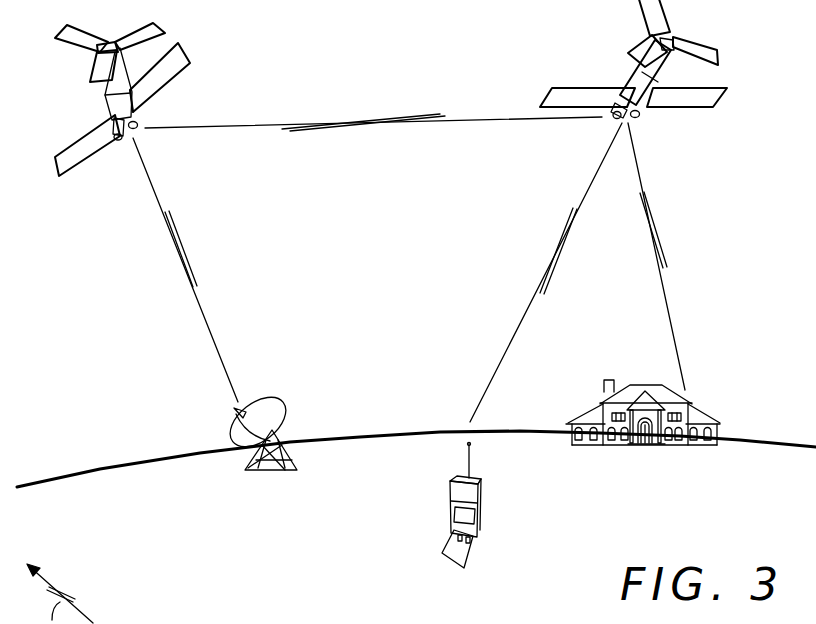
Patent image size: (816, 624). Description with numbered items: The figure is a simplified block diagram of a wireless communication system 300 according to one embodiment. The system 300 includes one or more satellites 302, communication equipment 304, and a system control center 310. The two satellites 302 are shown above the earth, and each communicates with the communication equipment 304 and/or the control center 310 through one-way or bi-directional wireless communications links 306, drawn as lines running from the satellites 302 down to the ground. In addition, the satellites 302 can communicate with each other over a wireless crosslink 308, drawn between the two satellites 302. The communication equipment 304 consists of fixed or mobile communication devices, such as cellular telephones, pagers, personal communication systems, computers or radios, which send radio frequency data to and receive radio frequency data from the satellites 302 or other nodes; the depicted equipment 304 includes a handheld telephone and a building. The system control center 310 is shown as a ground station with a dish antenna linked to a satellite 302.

The wireless communication system 300 is at (760, 539).
The satellite 302 is at (175, 75).
The communication equipment 304 is at (452, 496).
The wireless communications link 306 is at (179, 247).
The wireless crosslink 308 is at (380, 128).
The system control center 310 is at (275, 405).